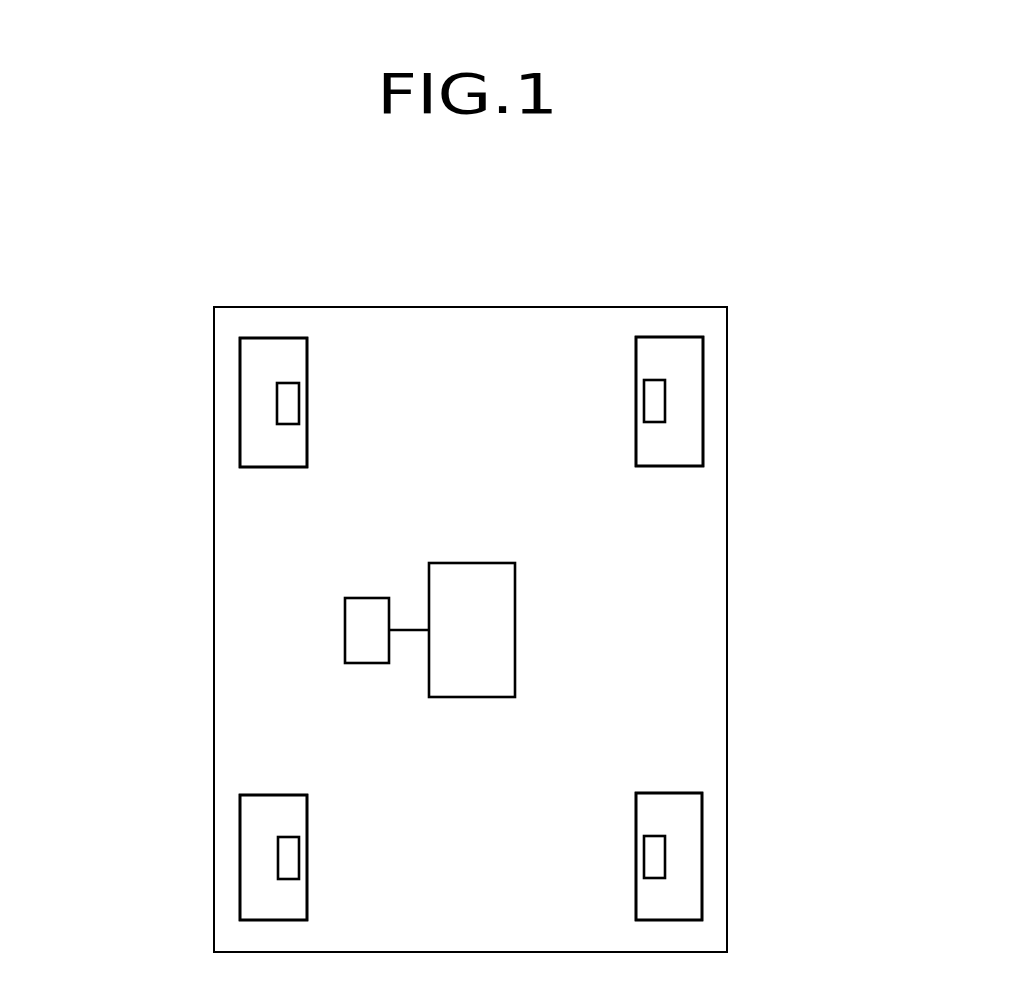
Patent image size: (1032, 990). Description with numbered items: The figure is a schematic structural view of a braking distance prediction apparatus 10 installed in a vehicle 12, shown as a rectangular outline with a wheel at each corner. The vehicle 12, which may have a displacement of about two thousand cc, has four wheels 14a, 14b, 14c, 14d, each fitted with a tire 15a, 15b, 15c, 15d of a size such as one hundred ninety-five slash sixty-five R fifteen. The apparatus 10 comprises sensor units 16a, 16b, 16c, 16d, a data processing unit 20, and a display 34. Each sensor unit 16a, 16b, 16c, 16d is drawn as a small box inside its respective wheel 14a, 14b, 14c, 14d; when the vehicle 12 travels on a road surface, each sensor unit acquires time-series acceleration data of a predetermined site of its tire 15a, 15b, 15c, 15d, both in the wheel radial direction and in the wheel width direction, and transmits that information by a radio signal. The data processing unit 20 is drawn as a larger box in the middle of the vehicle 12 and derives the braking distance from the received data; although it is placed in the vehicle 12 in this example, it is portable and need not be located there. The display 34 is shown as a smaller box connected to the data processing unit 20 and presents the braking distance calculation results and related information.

The braking distance prediction apparatus 10 is at (709, 255).
The vehicle 12 is at (519, 307).
The wheel 14a is at (703, 360).
The wheel 14b is at (240, 362).
The wheel 14c is at (702, 814).
The wheel 14d is at (240, 816).
The tire 15a is at (769, 401).
The tire 15b is at (173, 402).
The tire 15c is at (769, 856).
The tire 15d is at (173, 857).
The sensor unit 16a is at (665, 402).
The sensor unit 16b is at (277, 405).
The sensor unit 16c is at (665, 856).
The sensor unit 16d is at (278, 857).
The data processing unit 20 is at (515, 631).
The display 34 is at (345, 633).